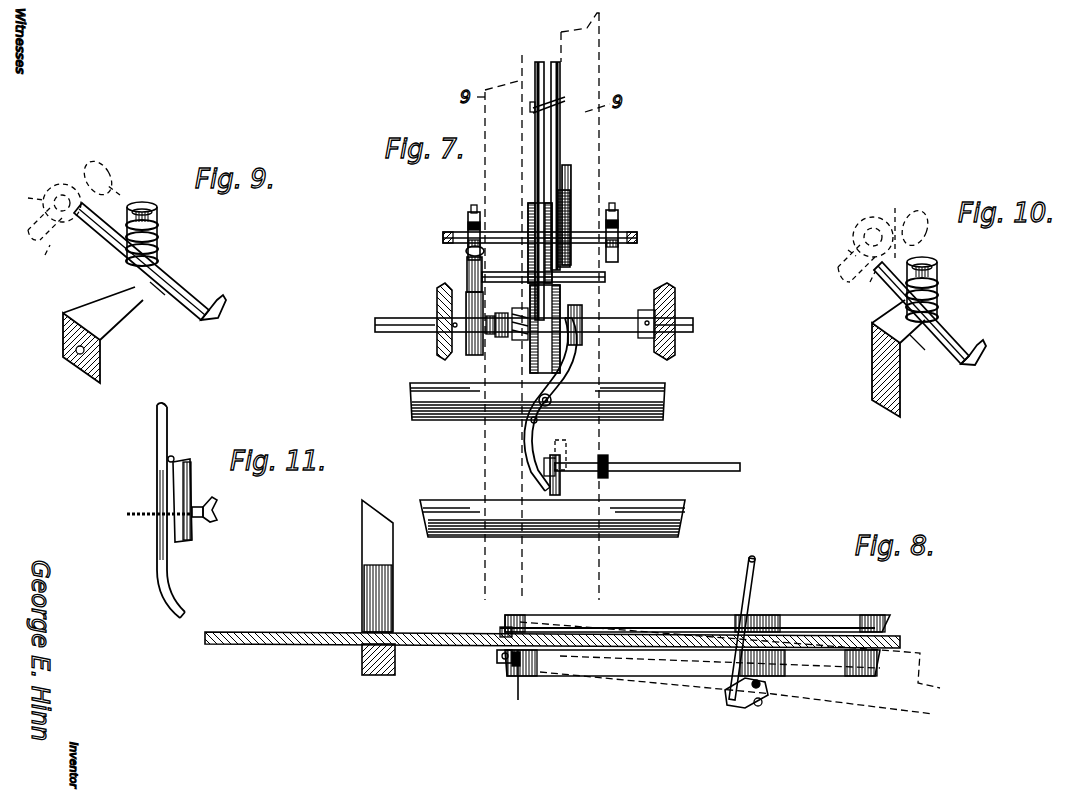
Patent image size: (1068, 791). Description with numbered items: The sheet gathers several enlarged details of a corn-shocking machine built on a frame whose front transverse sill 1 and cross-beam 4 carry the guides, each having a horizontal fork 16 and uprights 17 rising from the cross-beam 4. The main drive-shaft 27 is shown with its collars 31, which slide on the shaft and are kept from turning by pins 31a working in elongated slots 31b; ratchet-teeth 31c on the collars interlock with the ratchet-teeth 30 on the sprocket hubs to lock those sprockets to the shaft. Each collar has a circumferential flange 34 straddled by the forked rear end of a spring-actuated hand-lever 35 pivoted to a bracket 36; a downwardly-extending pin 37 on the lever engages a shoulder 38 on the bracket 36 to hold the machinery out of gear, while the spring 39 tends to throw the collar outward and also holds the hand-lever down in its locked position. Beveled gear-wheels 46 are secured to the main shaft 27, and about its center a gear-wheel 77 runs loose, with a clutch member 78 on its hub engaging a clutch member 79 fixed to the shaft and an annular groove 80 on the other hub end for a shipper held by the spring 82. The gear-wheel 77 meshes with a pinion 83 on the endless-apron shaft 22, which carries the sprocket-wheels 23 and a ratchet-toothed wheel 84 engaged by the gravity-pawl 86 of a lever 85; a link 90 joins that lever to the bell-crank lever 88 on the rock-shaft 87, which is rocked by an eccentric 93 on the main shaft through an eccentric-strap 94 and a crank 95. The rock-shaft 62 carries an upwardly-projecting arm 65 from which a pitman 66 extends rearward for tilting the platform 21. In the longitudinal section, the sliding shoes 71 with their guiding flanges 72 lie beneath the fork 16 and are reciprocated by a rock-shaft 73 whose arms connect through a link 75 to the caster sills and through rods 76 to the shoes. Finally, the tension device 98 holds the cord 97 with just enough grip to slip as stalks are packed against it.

In FIG. 7, the front transverse sill 1 is at (548, 505).
In FIG. 7, the cross-beam 4 is at (600, 410).
In FIG. 8, the cross-beam 4 is at (395, 661).
In FIG. 8, the horizontal fork 16 is at (285, 641).
In FIG. 8, the uprights 17 is at (385, 572).
In FIG. 8, the tilting platform 21 is at (722, 652).
In FIG. 7, the endless-apron shaft 22 is at (575, 230).
In FIG. 8, the endless-apron shaft 22 is at (525, 687).
In FIG. 7, the sprocket-wheels 23 is at (468, 222).
In FIG. 8, the sprocket-wheels 23 is at (510, 665).
In FIG. 7, the main drive-shaft 27 is at (610, 325).
In FIG. 9, the main drive-shaft 27 is at (31, 237).
In FIG. 10, the main drive-shaft 27 is at (832, 282).
In FIG. 9, the ratchet-teeth 30 is at (112, 172).
In FIG. 10, the ratchet-teeth 30 is at (925, 224).
In FIG. 9, the collars 31 is at (65, 224).
In FIG. 10, the collars 31 is at (852, 242).
In FIG. 9, the pins 31a is at (23, 198).
In FIG. 10, the pins 31a is at (837, 247).
In FIG. 9, the elongated slots 31b is at (37, 258).
In FIG. 10, the elongated slots 31b is at (864, 284).
In FIG. 9, the ratchet-teeth 31c is at (132, 185).
In FIG. 10, the ratchet-teeth 31c is at (882, 221).
In FIG. 9, the circumferential flange 34 is at (50, 184).
In FIG. 10, the circumferential flange 34 is at (862, 221).
In FIG. 9, the spring-actuated hand-lever 35 is at (172, 292).
In FIG. 10, the spring-actuated hand-lever 35 is at (935, 333).
In FIG. 9, the bracket 36 is at (103, 335).
In FIG. 10, the bracket 36 is at (872, 330).
In FIG. 9, the downwardly-extending pin 37 is at (167, 294).
In FIG. 10, the downwardly-extending pin 37 is at (918, 352).
In FIG. 9, the shoulder 38 is at (145, 303).
In FIG. 10, the shoulder 38 is at (970, 346).
In FIG. 9, the spring 39 is at (158, 232).
In FIG. 10, the spring 39 is at (938, 290).
In FIG. 7, the beveled gear-wheels 46 is at (437, 297).
In FIG. 7, the rock-shaft 62 is at (642, 461).
In FIG. 7, the upwardly-projecting arm 65 is at (561, 478).
In FIG. 7, the pitman 66 is at (566, 448).
In FIG. 8, the sliding shoes 71 is at (484, 651).
In FIG. 8, the flanges 72 is at (502, 633).
In FIG. 8, the rock-shaft 73 is at (768, 687).
In FIG. 8, the link 75 is at (745, 611).
In FIG. 8, the rods 76 is at (670, 632).
In FIG. 7, the gear-wheel 77 is at (556, 326).
In FIG. 7, the clutch member 78 is at (530, 314).
In FIG. 7, the clutch member 79 is at (497, 334).
In FIG. 7, the annular groove 80 is at (581, 334).
In FIG. 7, the spring 82 is at (520, 418).
In FIG. 7, the pinion 83 is at (530, 218).
In FIG. 7, the ratchet-toothed wheel 84 is at (570, 257).
In FIG. 7, the lever 85 is at (560, 140).
In FIG. 7, the gravity-pawl 86 is at (571, 192).
In FIG. 7, the rock-shaft 87 is at (566, 376).
In FIG. 7, the bell-crank lever 88 is at (535, 81).
In FIG. 7, the link 90 is at (560, 104).
In FIG. 7, the eccentric 93 is at (468, 350).
In FIG. 7, the eccentric-strap 94 is at (467, 267).
In FIG. 7, the crank 95 is at (488, 251).
In FIG. 7, the cord or rope 97 is at (543, 269).
In FIG. 11, the tension device 98 is at (195, 541).